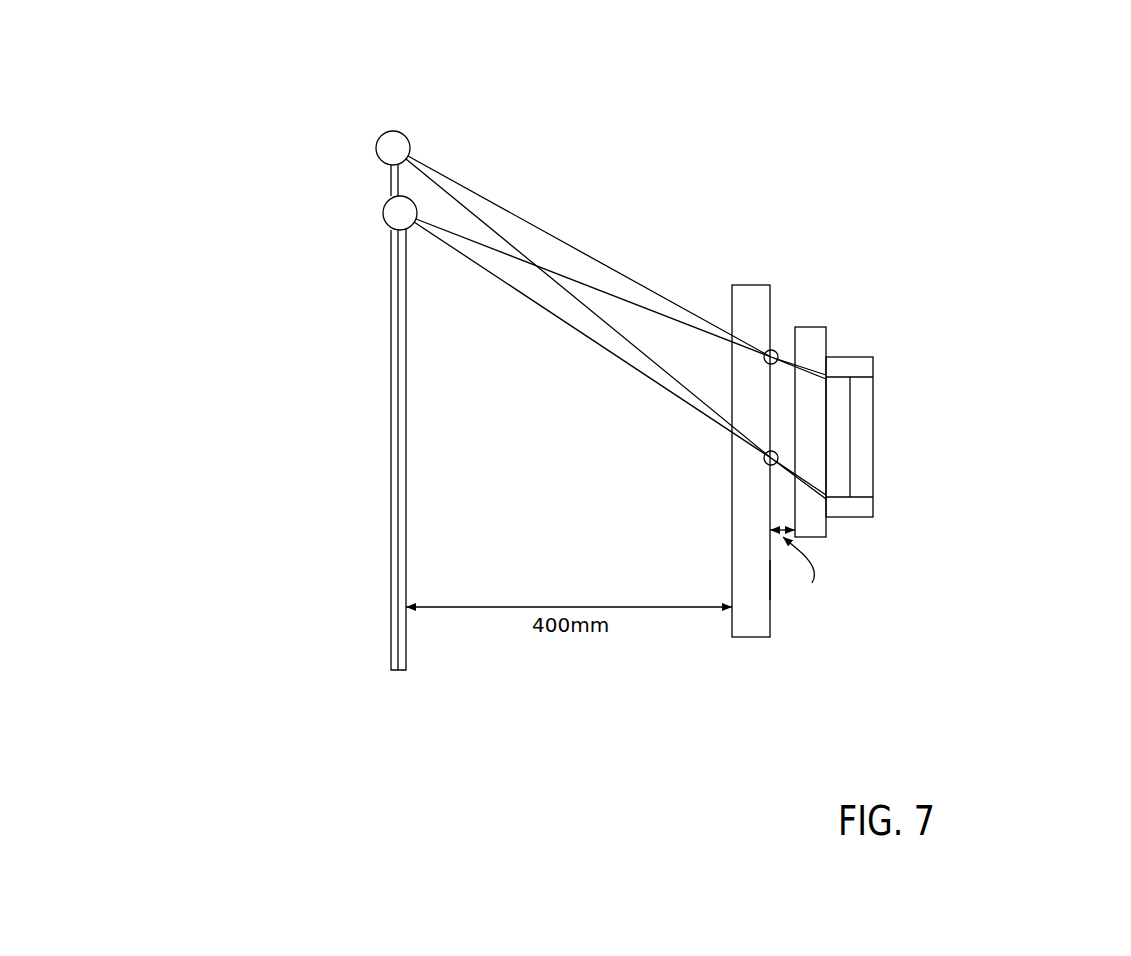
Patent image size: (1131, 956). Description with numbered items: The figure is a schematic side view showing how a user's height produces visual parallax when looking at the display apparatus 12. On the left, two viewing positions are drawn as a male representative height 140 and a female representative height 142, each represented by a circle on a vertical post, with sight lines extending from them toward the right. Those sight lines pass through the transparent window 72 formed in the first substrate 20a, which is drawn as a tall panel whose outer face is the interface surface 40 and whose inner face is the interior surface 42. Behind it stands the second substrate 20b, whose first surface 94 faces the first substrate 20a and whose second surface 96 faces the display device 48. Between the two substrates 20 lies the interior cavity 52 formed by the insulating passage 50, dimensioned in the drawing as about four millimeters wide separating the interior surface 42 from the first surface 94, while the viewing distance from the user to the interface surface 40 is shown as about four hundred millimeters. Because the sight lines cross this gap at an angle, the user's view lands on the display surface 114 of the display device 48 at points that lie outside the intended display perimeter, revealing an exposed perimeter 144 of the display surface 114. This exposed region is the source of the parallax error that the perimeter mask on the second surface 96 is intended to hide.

The display apparatus 12 is at (1030, 172).
The substrate 20 is at (746, 297).
The first substrate 20a is at (283, 83).
The second substrate 20b is at (815, 333).
The interface surface 40 is at (732, 628).
The interior surface 42 is at (770, 580).
The display device 48 is at (840, 450).
The insulating passage 50 is at (771, 513).
The interior cavity 52 is at (783, 305).
The transparent window 72 is at (745, 390).
The first surface 94 is at (806, 340).
The second surface 96 is at (826, 527).
The display surface 114 is at (825, 417).
The male representative height 140 is at (377, 150).
The female representative height 142 is at (387, 228).
The exposed perimeter 144 is at (822, 502).